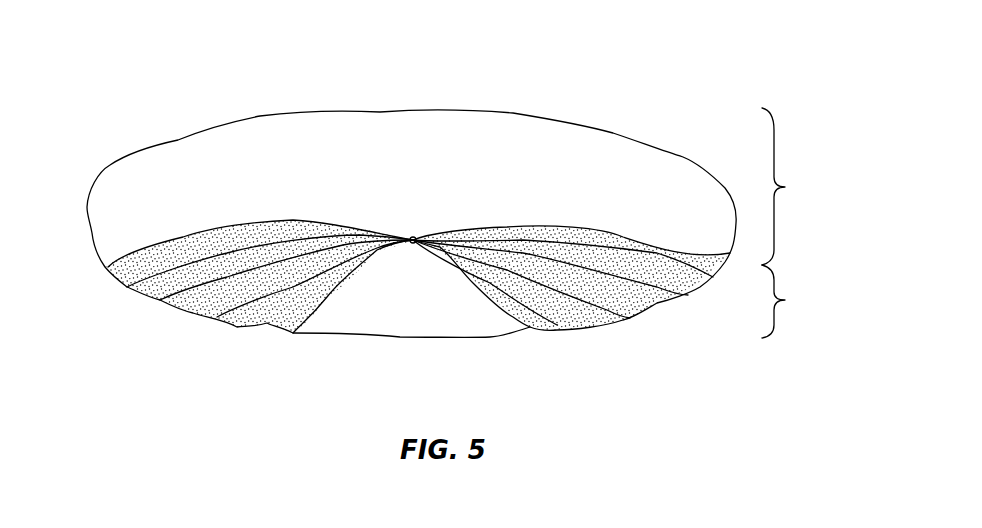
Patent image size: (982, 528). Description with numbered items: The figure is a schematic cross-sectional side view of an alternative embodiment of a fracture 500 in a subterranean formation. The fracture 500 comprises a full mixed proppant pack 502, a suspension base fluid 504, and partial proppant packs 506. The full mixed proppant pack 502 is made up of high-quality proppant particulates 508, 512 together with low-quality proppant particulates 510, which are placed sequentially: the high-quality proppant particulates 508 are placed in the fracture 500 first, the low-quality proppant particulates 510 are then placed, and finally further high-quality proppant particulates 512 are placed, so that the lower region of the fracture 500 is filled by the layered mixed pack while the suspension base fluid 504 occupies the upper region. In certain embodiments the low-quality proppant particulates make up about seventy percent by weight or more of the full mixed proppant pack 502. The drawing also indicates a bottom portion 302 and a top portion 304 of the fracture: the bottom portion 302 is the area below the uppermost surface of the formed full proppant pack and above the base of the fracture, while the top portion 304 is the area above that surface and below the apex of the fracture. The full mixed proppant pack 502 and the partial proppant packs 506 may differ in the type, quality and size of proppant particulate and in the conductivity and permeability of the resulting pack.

The fracture 500 is at (163, 52).
The full mixed proppant pack 502 is at (118, 254).
The suspension base fluid 504 is at (677, 157).
The partial proppant packs 506 is at (584, 131).
The high-quality proppant particulates 508 is at (628, 305).
The low-quality proppant particulates 510 is at (427, 309).
The high-quality proppant particulates 512 is at (164, 285).
The bottom portion 302 is at (785, 300).
The top portion 304 is at (785, 187).